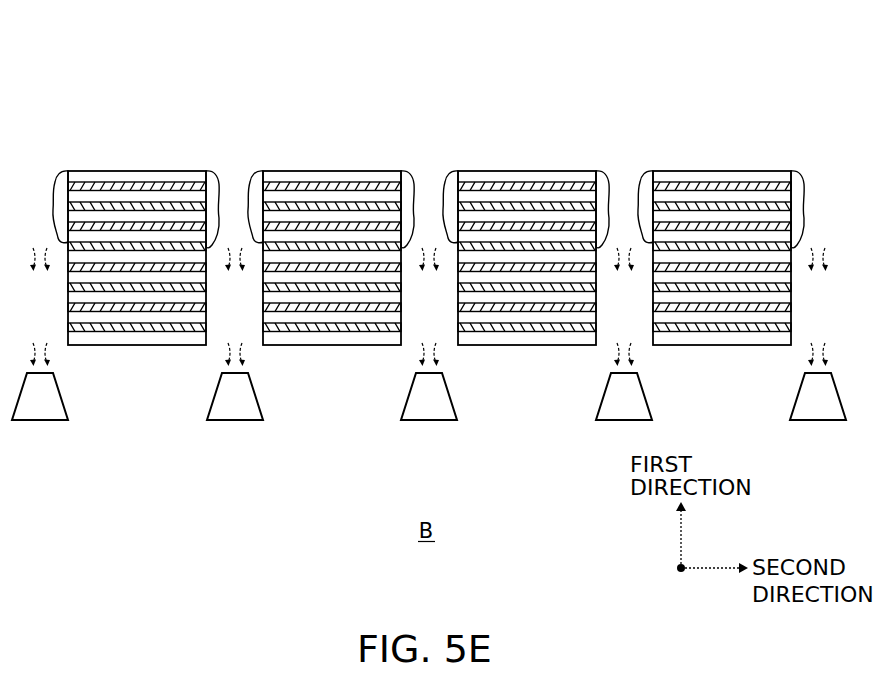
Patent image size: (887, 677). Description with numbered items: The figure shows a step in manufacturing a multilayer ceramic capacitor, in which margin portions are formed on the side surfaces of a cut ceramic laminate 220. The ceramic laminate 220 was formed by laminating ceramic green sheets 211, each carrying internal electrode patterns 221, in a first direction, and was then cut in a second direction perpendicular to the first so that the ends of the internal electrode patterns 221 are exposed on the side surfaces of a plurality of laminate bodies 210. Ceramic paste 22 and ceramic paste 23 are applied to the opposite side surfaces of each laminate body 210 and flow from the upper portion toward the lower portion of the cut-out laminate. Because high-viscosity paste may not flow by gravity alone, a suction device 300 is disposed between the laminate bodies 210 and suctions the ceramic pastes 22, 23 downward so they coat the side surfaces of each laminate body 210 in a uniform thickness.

The ceramic laminate 220 is at (63, 52).
The laminated body 210 is at (137, 210).
The ceramic green sheet 211 is at (180, 197).
The internal electrode pattern 221 is at (138, 182).
The ceramic paste 22 is at (55, 171).
The ceramic paste 23 is at (217, 175).
The suction device 300 is at (439, 421).